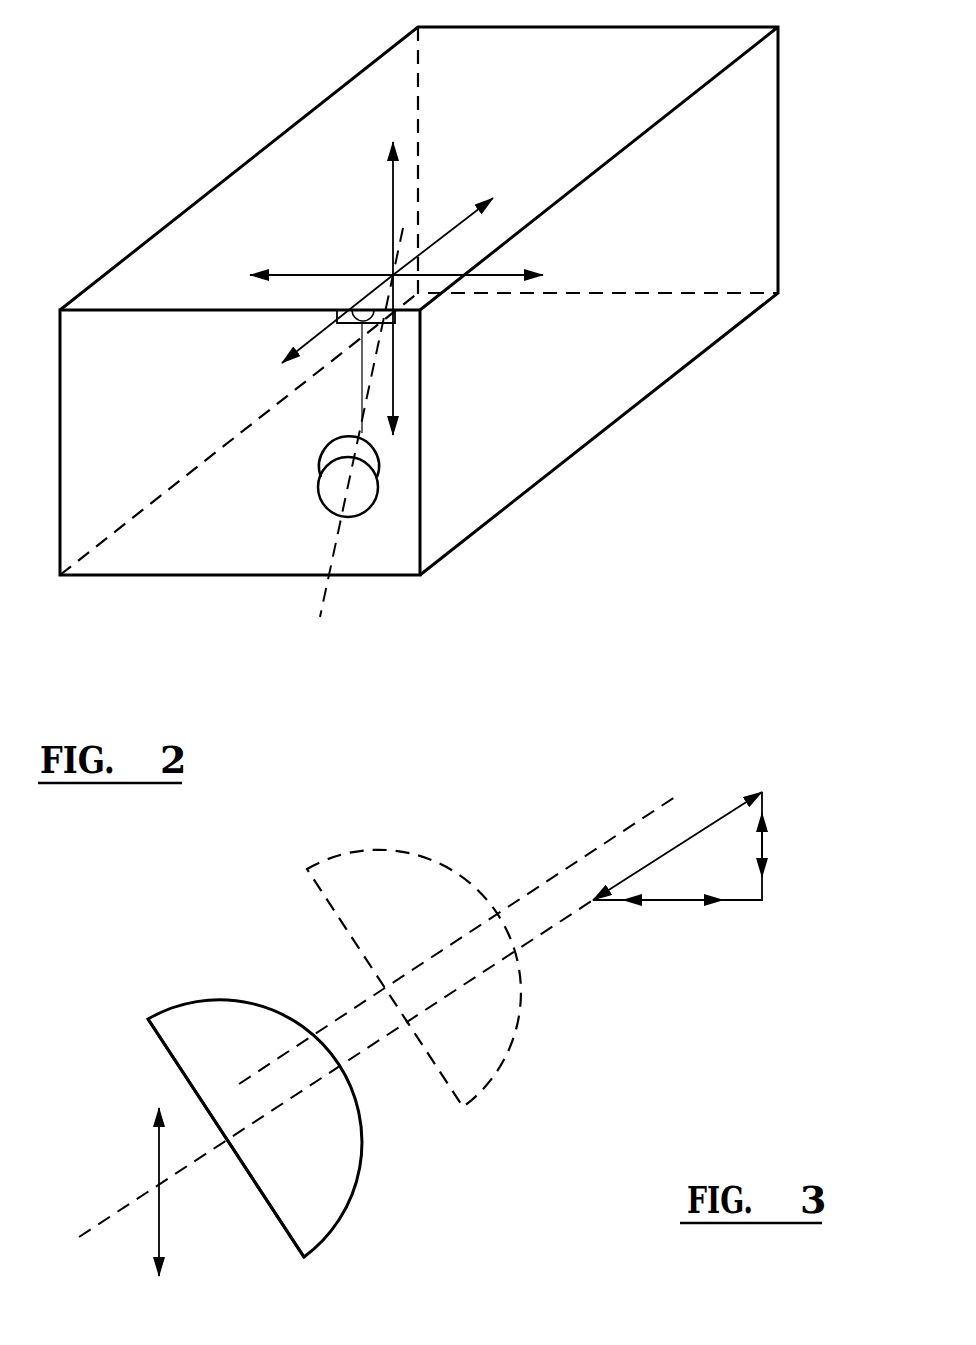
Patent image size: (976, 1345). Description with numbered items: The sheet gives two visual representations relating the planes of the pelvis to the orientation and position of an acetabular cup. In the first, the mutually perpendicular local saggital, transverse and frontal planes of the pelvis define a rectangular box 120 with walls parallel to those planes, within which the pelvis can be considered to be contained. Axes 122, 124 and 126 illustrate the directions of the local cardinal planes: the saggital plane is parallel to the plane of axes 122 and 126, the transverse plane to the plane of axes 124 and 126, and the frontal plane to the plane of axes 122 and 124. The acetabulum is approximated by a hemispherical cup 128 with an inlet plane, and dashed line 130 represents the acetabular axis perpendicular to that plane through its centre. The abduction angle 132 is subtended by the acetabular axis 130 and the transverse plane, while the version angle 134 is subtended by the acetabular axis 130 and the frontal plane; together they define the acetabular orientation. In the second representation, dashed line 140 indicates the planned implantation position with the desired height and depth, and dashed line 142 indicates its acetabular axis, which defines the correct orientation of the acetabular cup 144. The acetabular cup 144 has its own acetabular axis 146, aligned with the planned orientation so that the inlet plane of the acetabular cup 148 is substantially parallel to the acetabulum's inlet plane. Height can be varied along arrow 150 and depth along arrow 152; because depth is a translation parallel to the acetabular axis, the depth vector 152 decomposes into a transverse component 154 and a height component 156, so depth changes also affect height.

In FIG. 2, the box 120 is at (228, 177).
In FIG. 2, the axis 122 is at (392, 206).
In FIG. 2, the axis 124 is at (452, 222).
In FIG. 2, the axis 126 is at (502, 273).
In FIG. 2, the hemispherical cup 128 is at (380, 465).
In FIG. 2, the acetabular axis 130 is at (318, 605).
In FIG. 2, the abduction angle 132 is at (392, 322).
In FIG. 2, the version angle 134 is at (357, 317).
In FIG. 3, the planned implantation position 140 is at (425, 848).
In FIG. 3, the acetabular axis of the planned position 142 is at (608, 838).
In FIG. 3, the acetabular cup 144 is at (226, 996).
In FIG. 3, the acetabular axis 146 is at (187, 1166).
In FIG. 3, the inlet plane of the acetabular cup 148 is at (168, 1050).
In FIG. 3, the arrow 150 is at (157, 1157).
In FIG. 3, the depth vector 152 is at (705, 825).
In FIG. 3, the transverse component 154 is at (683, 903).
In FIG. 3, the height component 156 is at (766, 843).